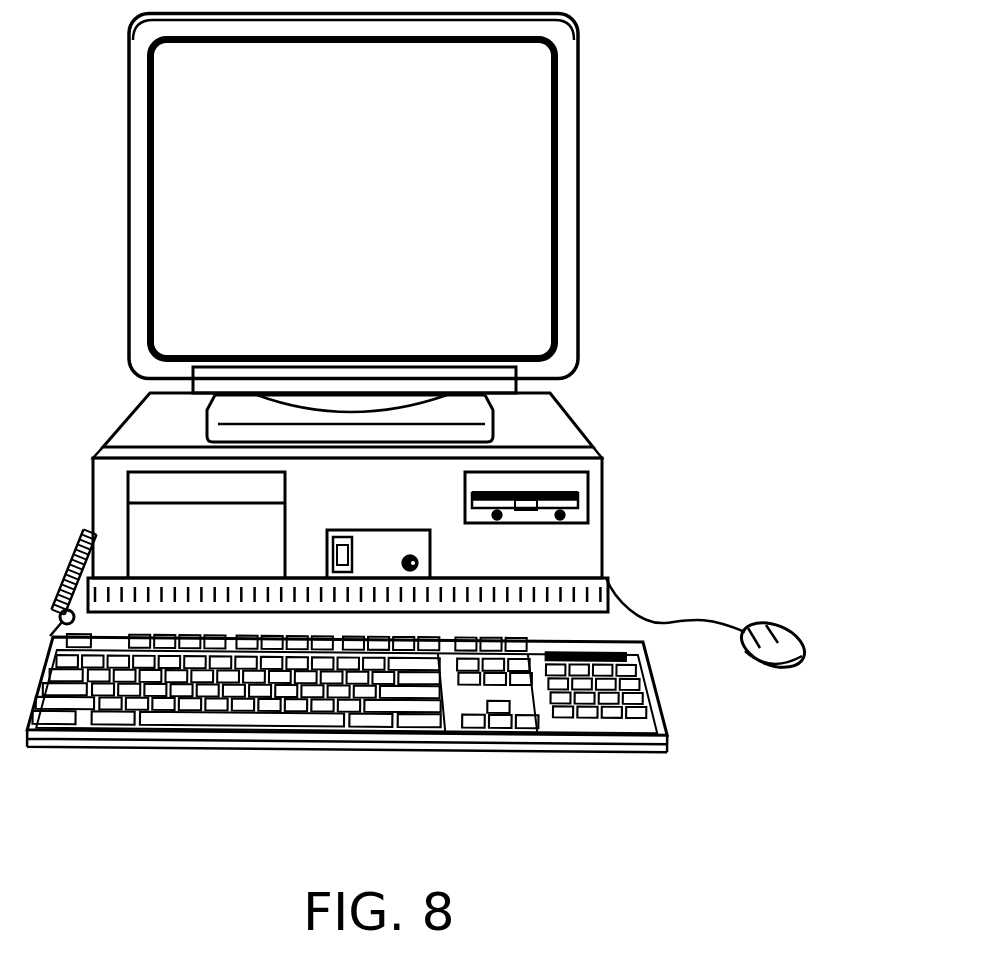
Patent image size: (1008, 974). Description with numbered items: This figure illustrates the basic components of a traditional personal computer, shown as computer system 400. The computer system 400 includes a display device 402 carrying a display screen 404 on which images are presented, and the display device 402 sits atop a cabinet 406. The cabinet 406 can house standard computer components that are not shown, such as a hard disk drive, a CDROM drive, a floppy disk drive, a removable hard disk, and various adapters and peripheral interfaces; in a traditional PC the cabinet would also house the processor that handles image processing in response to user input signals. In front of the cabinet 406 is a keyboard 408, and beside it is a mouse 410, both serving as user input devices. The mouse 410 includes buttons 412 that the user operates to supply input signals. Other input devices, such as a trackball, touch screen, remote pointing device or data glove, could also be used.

The computer system 400 is at (745, 90).
The display device 402 is at (573, 177).
The display screen 404 is at (498, 118).
The cabinet 406 is at (537, 427).
The keyboard 408 is at (437, 737).
The mouse 410 is at (795, 650).
The buttons 412 is at (750, 632).